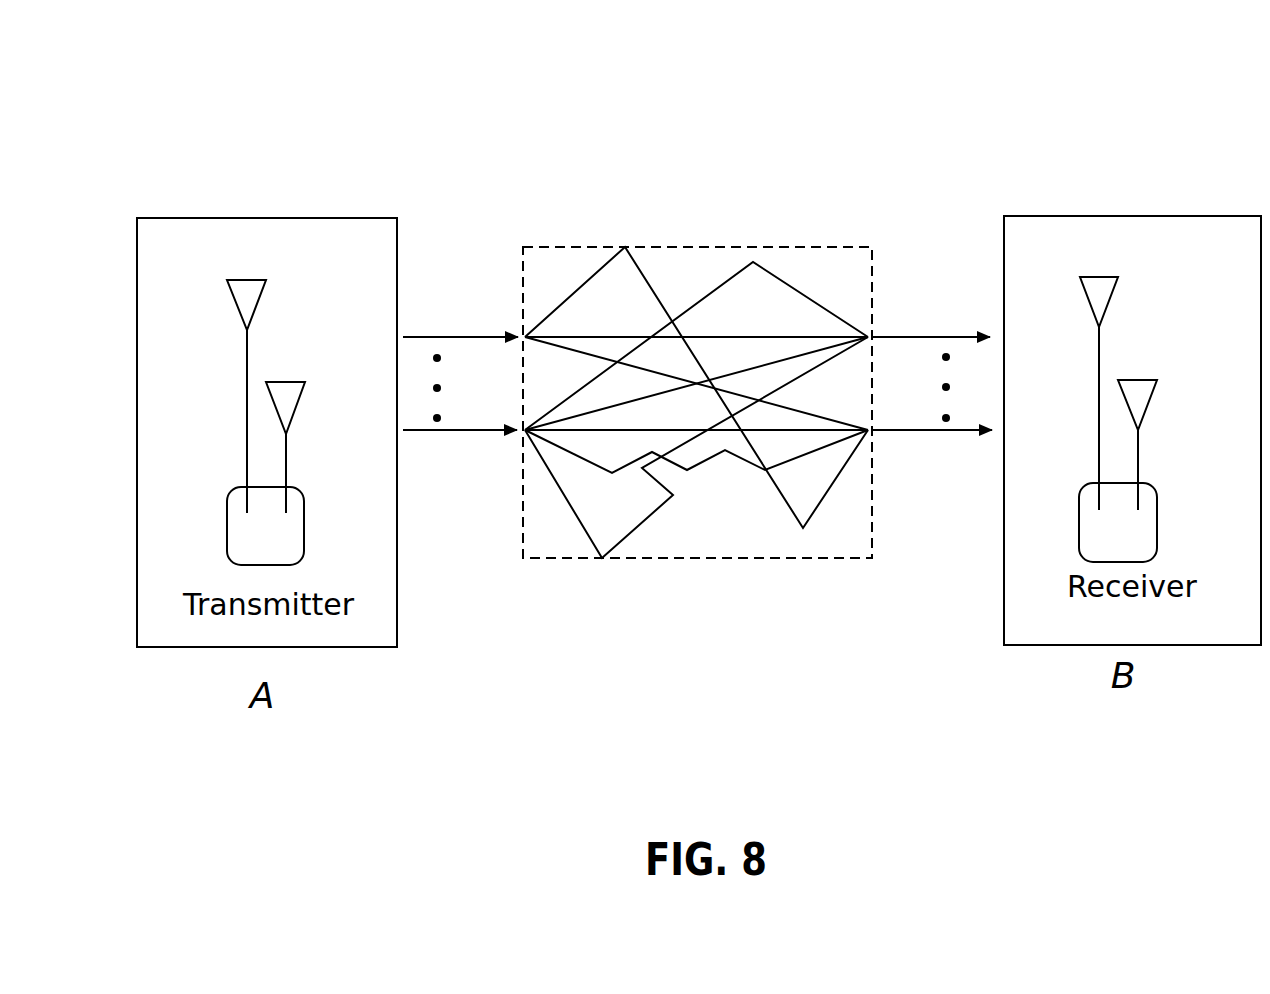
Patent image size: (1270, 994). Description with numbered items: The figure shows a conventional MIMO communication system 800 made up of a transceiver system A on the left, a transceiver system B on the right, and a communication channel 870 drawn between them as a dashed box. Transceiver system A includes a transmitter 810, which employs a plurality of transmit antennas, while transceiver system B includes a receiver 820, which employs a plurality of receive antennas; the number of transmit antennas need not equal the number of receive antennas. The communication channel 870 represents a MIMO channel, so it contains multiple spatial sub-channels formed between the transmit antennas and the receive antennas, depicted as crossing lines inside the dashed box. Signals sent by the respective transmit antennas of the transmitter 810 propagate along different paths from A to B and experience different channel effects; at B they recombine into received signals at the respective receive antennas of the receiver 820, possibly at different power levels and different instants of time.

The MIMO communication system 800 is at (708, 92).
The transmitter 810 is at (303, 530).
The receiver 820 is at (1157, 520).
The communication channel 870 is at (680, 556).